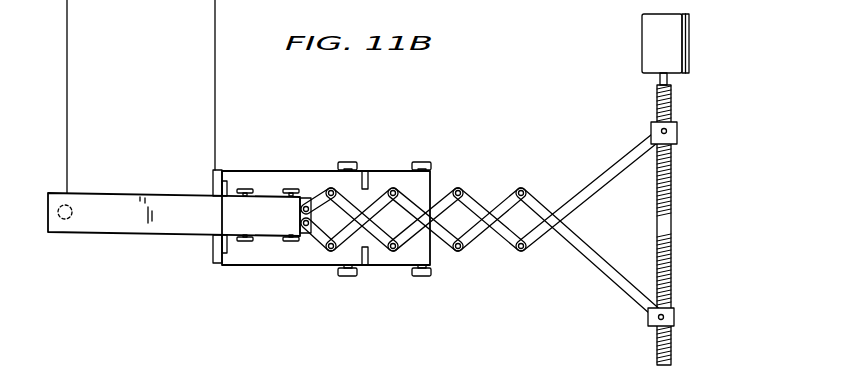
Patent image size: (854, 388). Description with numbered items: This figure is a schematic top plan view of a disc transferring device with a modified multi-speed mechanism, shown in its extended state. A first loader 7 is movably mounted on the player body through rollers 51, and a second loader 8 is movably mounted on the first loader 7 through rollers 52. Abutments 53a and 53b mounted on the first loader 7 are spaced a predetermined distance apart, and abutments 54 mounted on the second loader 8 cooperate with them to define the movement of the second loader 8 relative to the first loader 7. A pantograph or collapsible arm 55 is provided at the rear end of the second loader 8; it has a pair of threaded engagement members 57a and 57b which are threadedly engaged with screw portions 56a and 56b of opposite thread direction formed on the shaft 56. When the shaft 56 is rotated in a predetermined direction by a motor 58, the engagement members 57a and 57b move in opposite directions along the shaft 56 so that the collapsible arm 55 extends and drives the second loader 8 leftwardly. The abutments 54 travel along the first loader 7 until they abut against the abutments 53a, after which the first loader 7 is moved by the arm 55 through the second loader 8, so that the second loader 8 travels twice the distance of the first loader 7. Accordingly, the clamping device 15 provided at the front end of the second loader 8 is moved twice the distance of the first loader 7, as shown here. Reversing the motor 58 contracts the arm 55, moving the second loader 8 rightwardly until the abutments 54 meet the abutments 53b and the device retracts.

The first loader 7 is at (300, 172).
The second loader 8 is at (125, 224).
The clamping device 15 is at (70, 205).
The rollers 51 is at (346, 162).
The rollers 52 is at (290, 188).
The abutments 53a is at (213, 182).
The abutments 53b is at (370, 171).
The abutments 54 is at (229, 250).
The pantograph or collapsible arm 55 is at (470, 198).
The shaft 56 is at (671, 225).
The screw portion 56a is at (657, 108).
The screw portion 56b is at (656, 343).
The threaded engagement member 57a is at (677, 134).
The threaded engagement member 57b is at (674, 318).
The motor 58 is at (644, 36).